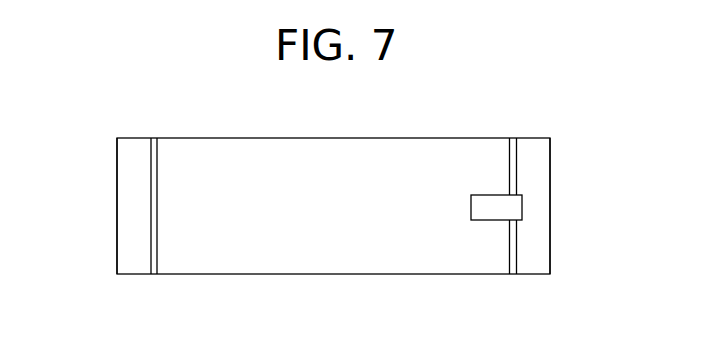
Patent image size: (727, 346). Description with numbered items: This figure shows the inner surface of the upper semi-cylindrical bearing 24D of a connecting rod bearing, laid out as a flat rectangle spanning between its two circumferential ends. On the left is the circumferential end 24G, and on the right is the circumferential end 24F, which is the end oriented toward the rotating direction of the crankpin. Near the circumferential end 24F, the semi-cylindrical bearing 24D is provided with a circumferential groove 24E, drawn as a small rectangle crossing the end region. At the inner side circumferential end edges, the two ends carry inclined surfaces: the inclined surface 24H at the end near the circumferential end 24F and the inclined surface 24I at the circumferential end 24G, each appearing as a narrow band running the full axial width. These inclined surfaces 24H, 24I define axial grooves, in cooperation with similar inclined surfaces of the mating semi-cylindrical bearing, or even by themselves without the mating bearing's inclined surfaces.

The semi-cylindrical bearing 24D is at (372, 153).
The circumferential end 24G is at (130, 195).
The inclined surface 24I is at (157, 227).
The inclined surface 24H is at (513, 248).
The circumferential end 24F is at (542, 195).
The circumferential groove 24E is at (477, 209).